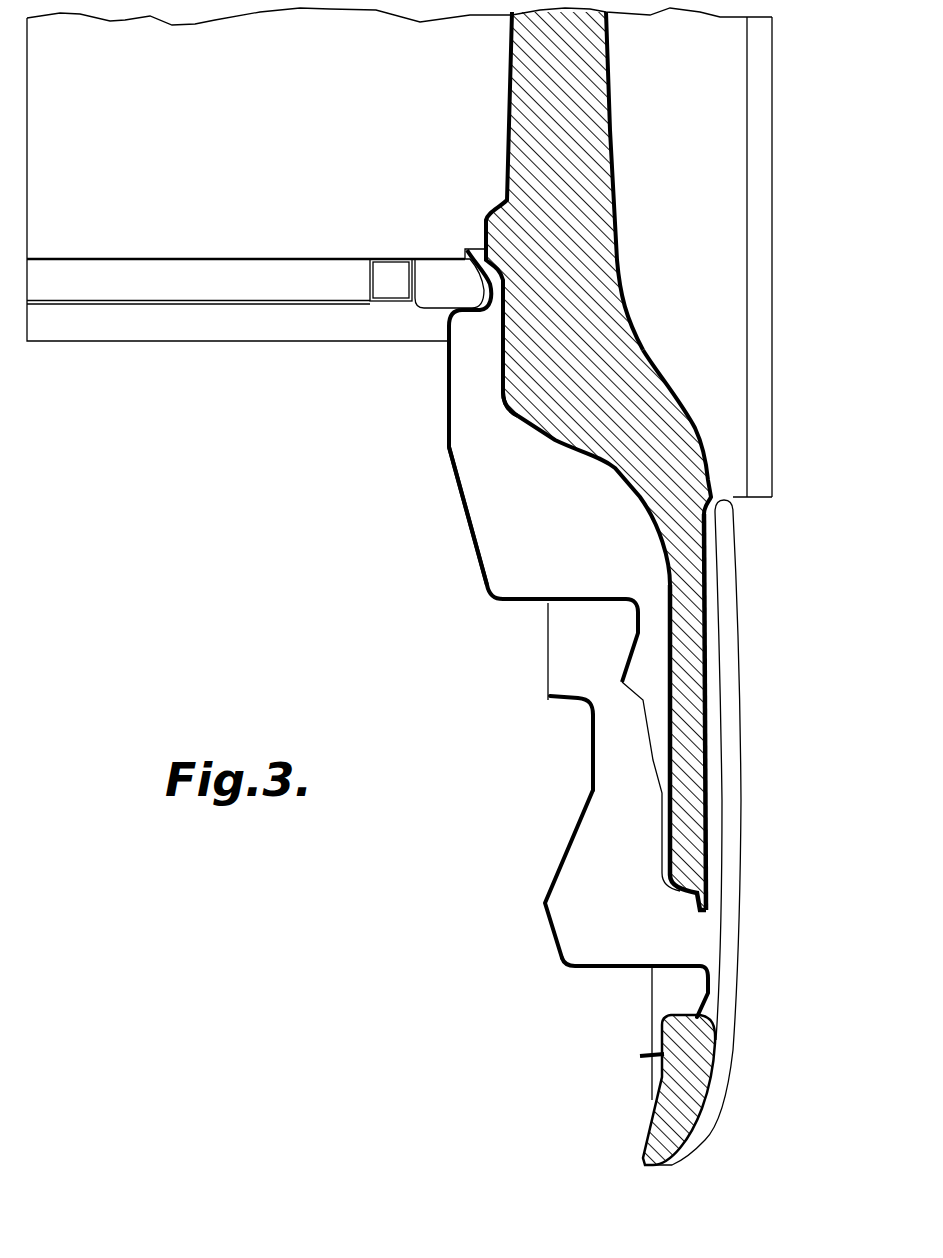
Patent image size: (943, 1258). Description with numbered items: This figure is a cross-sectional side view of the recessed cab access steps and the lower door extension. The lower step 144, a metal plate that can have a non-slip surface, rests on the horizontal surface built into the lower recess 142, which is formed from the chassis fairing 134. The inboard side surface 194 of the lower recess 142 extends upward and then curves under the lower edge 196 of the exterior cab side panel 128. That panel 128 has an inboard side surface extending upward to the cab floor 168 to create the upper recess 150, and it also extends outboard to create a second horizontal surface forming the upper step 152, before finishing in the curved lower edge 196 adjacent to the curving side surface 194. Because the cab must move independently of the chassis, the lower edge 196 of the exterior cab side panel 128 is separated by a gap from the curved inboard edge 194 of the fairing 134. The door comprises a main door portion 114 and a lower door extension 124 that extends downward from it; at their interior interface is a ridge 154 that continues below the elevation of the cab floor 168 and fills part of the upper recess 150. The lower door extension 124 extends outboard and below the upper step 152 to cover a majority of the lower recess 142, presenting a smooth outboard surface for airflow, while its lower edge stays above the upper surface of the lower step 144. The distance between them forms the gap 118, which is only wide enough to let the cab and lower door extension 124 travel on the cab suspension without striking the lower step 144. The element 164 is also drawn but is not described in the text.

The main door portion 114 is at (620, 243).
The gap 118 is at (730, 926).
The lower door extension 124 is at (712, 740).
The exterior cab side panel 128 is at (447, 408).
The chassis fairing 134 is at (585, 750).
The lower recess 142 is at (608, 848).
The lower step 144 is at (618, 950).
The upper recess 150 is at (515, 490).
The upper step 152 is at (573, 595).
The ridge 154 is at (505, 413).
The seal strip 164 is at (723, 800).
The cab floor 168 is at (347, 259).
The inboard side surface 194 is at (577, 705).
The lower edge 196 is at (617, 670).